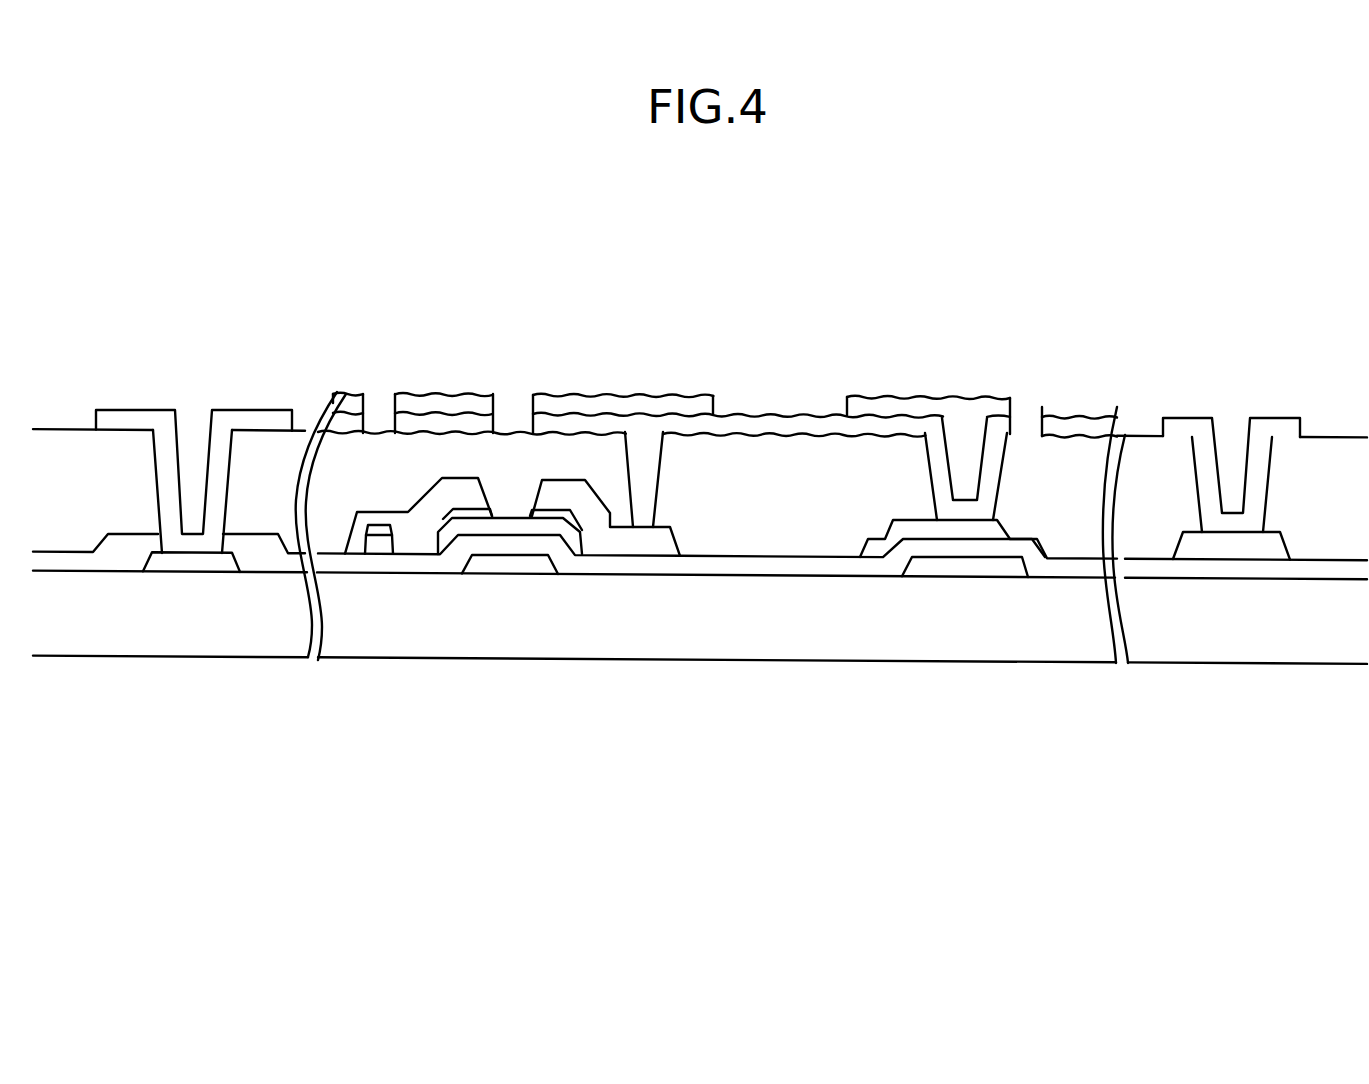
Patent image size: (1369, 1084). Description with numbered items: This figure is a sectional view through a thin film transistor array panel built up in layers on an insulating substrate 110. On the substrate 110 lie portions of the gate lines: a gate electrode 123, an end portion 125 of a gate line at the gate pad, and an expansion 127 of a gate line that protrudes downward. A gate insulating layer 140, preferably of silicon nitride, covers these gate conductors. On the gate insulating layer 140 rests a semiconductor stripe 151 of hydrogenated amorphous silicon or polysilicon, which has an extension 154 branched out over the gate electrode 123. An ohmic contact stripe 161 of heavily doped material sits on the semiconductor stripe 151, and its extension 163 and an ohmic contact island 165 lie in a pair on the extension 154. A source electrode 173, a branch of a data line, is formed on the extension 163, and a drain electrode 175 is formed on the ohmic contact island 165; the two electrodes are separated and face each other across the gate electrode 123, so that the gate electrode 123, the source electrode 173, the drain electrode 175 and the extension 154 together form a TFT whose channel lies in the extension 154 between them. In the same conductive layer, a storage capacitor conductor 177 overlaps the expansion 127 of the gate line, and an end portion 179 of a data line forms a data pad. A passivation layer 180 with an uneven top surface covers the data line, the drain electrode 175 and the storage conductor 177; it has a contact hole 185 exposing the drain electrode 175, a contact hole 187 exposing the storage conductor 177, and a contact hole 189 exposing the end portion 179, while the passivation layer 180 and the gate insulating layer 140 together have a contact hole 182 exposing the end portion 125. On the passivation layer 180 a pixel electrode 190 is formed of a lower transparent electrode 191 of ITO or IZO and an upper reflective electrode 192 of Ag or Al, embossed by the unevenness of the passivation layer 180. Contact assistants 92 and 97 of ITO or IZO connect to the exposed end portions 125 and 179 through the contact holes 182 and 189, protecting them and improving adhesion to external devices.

The insulating substrate 110 is at (77, 640).
The gate electrode 123 is at (518, 563).
The end portion of gate line 125 is at (187, 562).
The expansion of gate line 127 is at (985, 572).
The gate insulating layer 140 is at (760, 570).
The semiconductor stripe 151 is at (380, 554).
The extension of semiconductor stripe 154 is at (455, 535).
The ohmic contact stripe 161 is at (380, 527).
The extension of ohmic contact stripe 163 is at (478, 510).
The ohmic contact island 165 is at (542, 512).
The source electrode 173 is at (418, 540).
The drain electrode 175 is at (612, 540).
The storage capacitor conductor 177 is at (925, 530).
The end portion of data line 179 is at (1264, 540).
The passivation layer 180 is at (837, 538).
The contact hole 182 is at (194, 422).
The contact hole 185 is at (645, 450).
The contact hole 187 is at (967, 450).
The contact hole 189 is at (1232, 460).
The pixel electrode 190 is at (697, 346).
The transparent electrode 191 is at (758, 415).
The reflective electrode 192 is at (713, 395).
The contact assistant 92 is at (283, 413).
The contact assistant 97 is at (1190, 418).